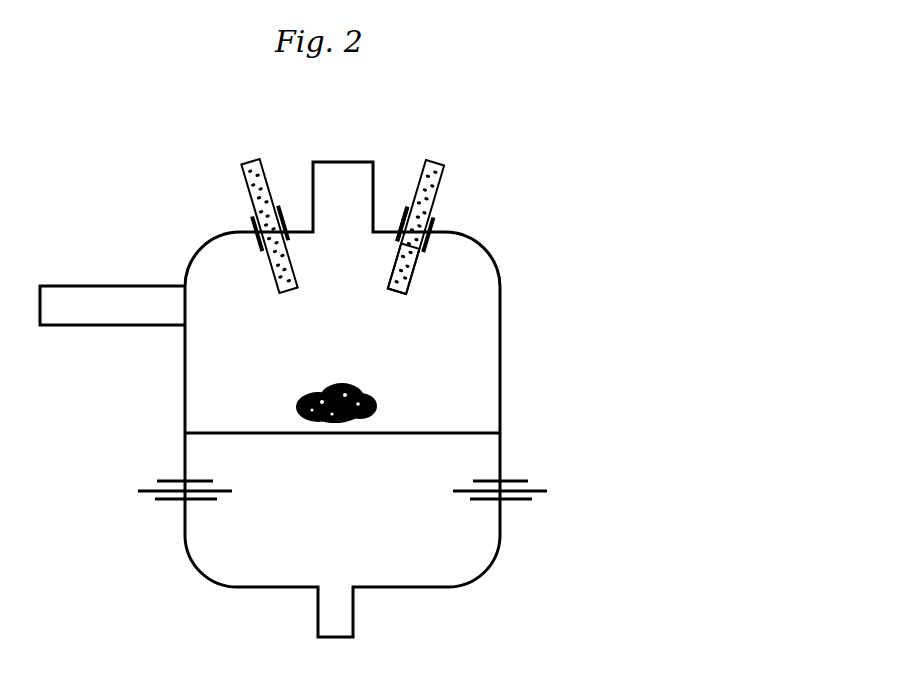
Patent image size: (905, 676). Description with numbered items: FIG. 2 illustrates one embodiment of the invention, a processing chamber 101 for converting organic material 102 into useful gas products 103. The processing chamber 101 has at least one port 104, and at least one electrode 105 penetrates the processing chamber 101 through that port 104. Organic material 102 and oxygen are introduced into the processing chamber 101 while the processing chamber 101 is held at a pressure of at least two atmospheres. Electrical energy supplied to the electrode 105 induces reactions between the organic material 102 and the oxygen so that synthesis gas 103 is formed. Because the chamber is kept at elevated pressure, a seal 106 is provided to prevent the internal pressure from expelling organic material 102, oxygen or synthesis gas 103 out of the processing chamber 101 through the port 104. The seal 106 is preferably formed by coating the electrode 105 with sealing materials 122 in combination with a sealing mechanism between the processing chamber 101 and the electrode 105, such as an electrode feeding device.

The processing chamber 101 is at (293, 399).
The organic material 102 is at (380, 403).
The useful gas products 103 is at (342, 349).
The port 104 is at (432, 228).
The electrode 105 is at (450, 176).
The seal 106 is at (423, 192).
The sealing materials 122 is at (410, 272).